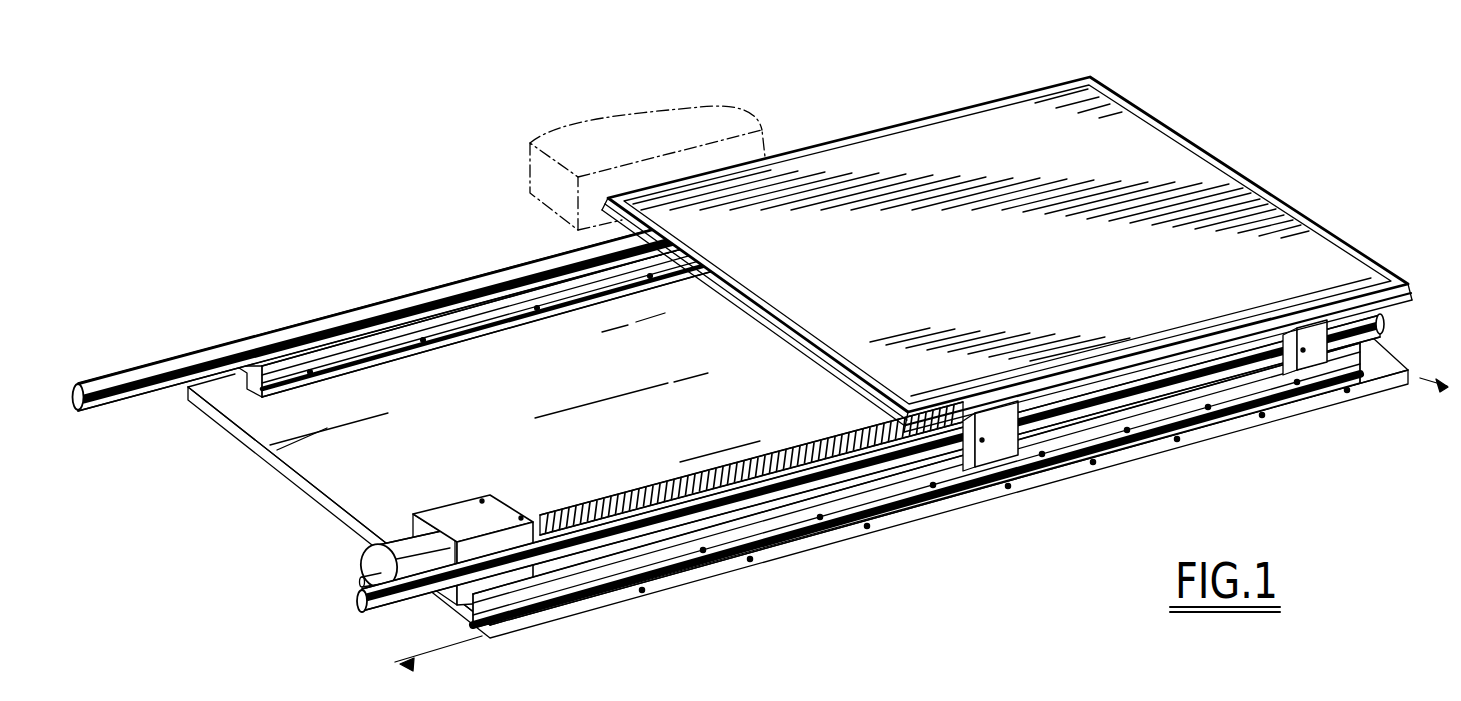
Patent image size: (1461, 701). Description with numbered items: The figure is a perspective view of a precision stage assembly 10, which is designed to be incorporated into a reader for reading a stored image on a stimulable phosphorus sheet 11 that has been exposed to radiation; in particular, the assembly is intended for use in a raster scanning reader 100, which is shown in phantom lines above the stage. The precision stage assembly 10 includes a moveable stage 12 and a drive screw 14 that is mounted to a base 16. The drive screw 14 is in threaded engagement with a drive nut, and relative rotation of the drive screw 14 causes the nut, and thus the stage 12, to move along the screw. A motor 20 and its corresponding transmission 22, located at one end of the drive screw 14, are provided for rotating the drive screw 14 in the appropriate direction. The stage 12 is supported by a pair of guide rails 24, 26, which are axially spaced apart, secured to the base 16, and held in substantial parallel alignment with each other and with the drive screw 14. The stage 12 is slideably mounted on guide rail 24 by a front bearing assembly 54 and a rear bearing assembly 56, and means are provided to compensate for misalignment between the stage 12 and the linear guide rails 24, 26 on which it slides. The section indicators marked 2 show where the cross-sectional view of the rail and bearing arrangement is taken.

The precision stage assembly 10 is at (743, 326).
The stimulable phosphorus sheet 11 is at (1040, 123).
The moveable stage 12 is at (863, 135).
The drive screw 14 is at (597, 508).
The base 16 is at (488, 417).
The motor 20 is at (362, 547).
The transmission 22 is at (468, 508).
The guide rail 24 is at (355, 630).
The guide rail 26 is at (347, 315).
The front bearing assembly 54 is at (1003, 437).
The rear bearing assembly 56 is at (1297, 357).
The raster scanning reader 100 is at (575, 135).
The section line 2- 2 is at (917, 507).